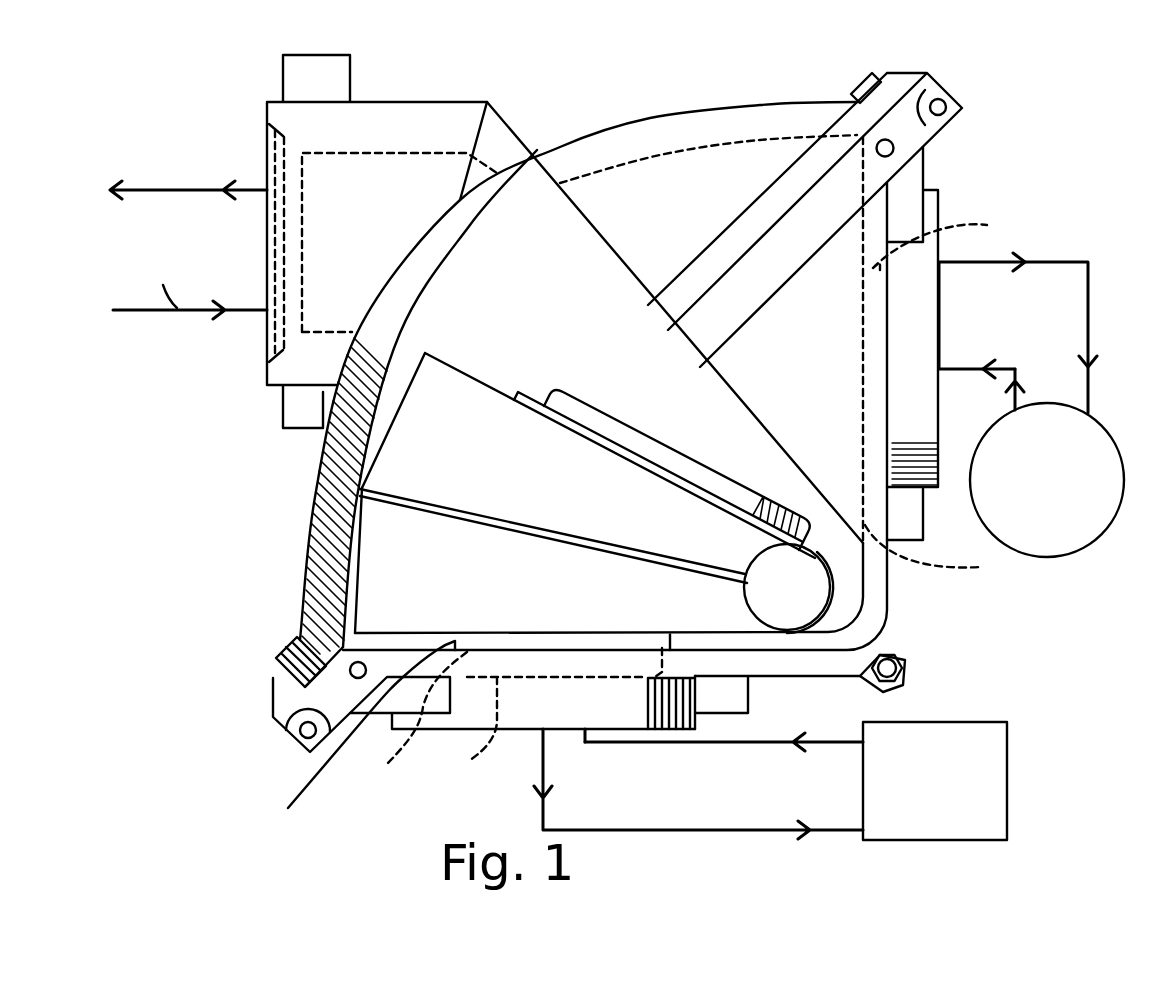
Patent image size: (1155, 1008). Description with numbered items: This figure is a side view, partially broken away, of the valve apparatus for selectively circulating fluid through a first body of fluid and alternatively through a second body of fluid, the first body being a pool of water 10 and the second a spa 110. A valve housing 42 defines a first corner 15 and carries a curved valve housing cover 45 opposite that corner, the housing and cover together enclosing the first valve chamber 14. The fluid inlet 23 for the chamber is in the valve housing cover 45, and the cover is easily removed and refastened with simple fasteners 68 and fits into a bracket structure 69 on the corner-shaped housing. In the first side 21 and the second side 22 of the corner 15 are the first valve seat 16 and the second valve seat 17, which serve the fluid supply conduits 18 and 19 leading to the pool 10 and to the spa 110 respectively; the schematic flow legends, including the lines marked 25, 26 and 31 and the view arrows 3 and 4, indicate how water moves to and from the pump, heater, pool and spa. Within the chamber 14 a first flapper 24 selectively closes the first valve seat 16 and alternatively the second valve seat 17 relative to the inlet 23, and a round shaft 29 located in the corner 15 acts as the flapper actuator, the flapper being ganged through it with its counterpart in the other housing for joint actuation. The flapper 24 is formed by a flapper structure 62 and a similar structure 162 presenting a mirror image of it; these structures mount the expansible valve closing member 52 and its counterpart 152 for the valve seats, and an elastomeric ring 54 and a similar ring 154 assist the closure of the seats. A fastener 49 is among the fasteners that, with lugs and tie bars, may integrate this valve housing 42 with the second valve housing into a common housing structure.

The section view direction arrow 3 is at (158, 434).
The view direction arrow 4 is at (1042, 184).
The pool of water 10 is at (920, 823).
The first valve chamber 14 is at (518, 297).
The first corner 15 is at (843, 618).
The first valve seat 16 is at (422, 724).
The second valve seat 17 is at (951, 240).
The fluid supply conduit 18 is at (540, 777).
The fluid supply conduit 19 is at (1035, 262).
The first side 21 is at (750, 645).
The second side 22 is at (940, 550).
The fluid inlet 23 is at (393, 312).
The first flapper 24 is at (360, 491).
The return conduit 25 is at (818, 745).
The spa return conduit 26 is at (1010, 376).
The round shaft 29 is at (837, 580).
The pump/heater conduit 31 is at (178, 188).
The valve housing 42 is at (258, 704).
The valve housing cover 45 is at (648, 119).
The fastener 49 is at (907, 657).
The expansible valve closing member 52 is at (562, 716).
The elastomeric ring 54 is at (363, 739).
The flapper structure 62 is at (377, 577).
The fastener 68 is at (853, 90).
The bracket structure 69 is at (917, 140).
The spa 110 is at (1025, 520).
The expansible valve closing member 152 is at (563, 371).
The elastomeric ring 154 is at (712, 468).
The flapper structure 162 is at (415, 437).